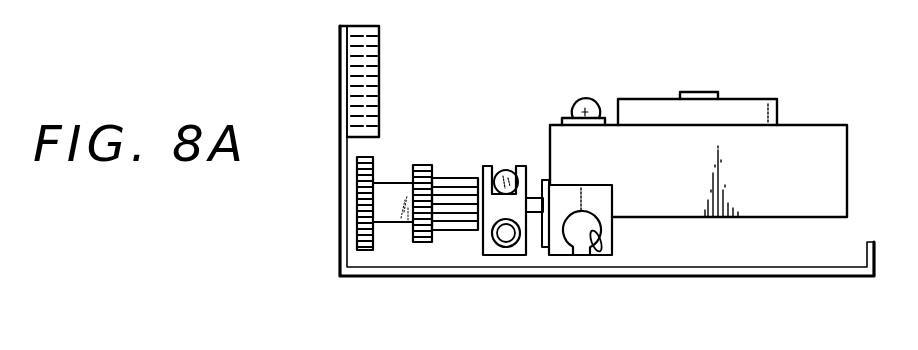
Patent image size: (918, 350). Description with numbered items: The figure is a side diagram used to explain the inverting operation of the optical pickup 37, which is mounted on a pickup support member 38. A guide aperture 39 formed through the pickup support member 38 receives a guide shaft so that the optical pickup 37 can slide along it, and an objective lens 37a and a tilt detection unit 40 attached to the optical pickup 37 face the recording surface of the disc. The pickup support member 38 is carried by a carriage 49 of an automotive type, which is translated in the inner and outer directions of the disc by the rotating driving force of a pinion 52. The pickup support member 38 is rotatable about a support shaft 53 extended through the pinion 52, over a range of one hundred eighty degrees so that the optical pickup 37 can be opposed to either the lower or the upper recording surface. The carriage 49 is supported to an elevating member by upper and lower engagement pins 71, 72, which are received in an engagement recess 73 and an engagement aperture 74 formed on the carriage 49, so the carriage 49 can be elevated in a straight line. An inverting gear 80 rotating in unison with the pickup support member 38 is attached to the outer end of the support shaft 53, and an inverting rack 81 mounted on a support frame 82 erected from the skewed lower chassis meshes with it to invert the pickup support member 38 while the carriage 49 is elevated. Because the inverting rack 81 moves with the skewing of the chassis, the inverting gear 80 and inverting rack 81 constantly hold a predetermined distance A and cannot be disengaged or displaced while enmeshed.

The inverting rack 81 is at (381, 70).
The inverting gear 80 is at (374, 165).
The support frame 82 is at (340, 220).
The predetermined distance A is at (315, 172).
The carriage 49 is at (482, 243).
The pinion 52 is at (451, 187).
The upper engagement pin 71 is at (507, 167).
The engagement recess 73 is at (512, 169).
The lower engagement pin 72 is at (508, 246).
The engagement aperture 74 is at (502, 245).
The support shaft 53 is at (538, 186).
The guide aperture 39 is at (588, 253).
The pickup support member 38 is at (808, 138).
The optical pickup 37 is at (752, 110).
The objective lens 37a is at (700, 92).
The tilt detection unit 40 is at (585, 98).